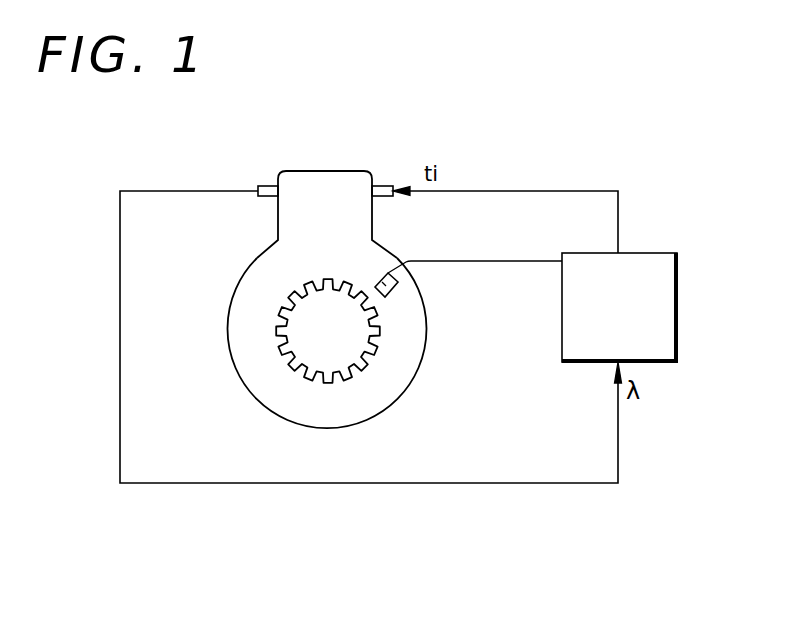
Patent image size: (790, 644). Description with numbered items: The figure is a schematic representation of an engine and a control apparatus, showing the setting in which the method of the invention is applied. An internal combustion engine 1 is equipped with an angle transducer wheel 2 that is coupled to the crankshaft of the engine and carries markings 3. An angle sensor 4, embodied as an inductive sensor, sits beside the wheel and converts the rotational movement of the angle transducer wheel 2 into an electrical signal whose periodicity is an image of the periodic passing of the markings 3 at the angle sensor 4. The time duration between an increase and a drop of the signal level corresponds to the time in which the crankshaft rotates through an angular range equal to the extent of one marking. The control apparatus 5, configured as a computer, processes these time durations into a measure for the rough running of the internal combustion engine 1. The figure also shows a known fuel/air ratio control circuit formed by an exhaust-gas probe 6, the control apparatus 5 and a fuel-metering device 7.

The internal combustion engine 1 is at (320, 190).
The angle transducer wheel 2 is at (280, 333).
The markings 3 is at (295, 292).
The angle sensor 4 is at (390, 287).
The control apparatus 5 is at (678, 323).
The exhaust-gas probe 6 is at (268, 184).
The fuel-metering device 7 is at (389, 183).